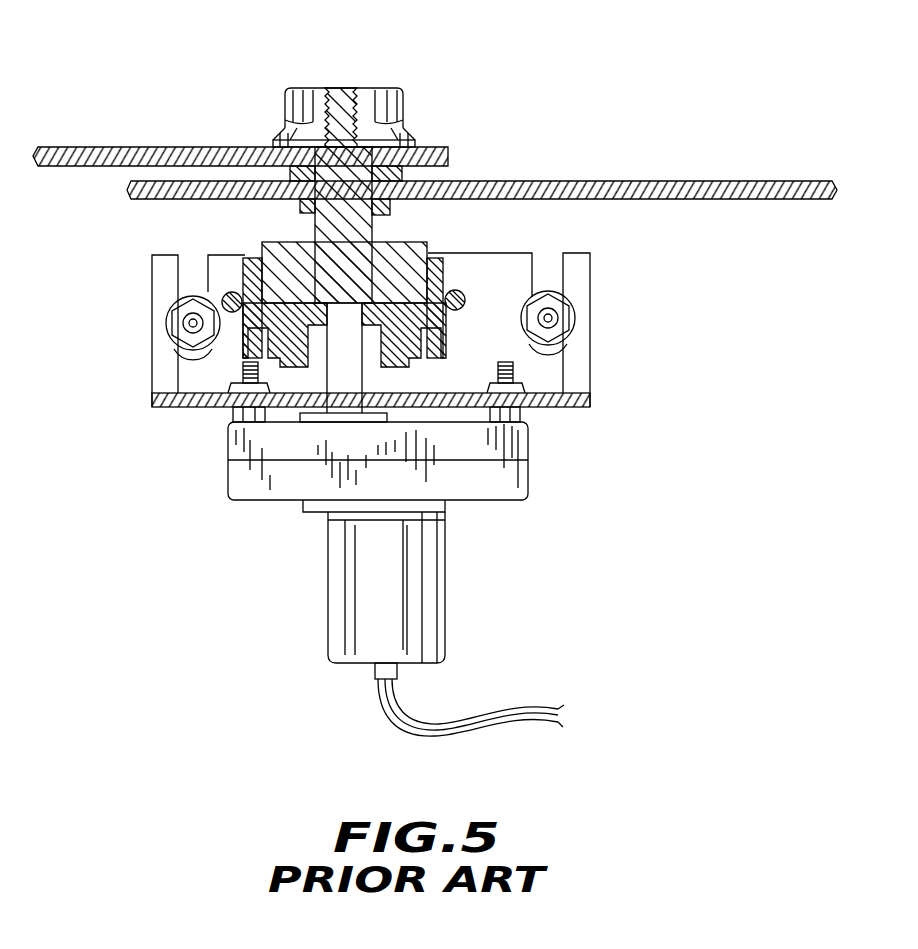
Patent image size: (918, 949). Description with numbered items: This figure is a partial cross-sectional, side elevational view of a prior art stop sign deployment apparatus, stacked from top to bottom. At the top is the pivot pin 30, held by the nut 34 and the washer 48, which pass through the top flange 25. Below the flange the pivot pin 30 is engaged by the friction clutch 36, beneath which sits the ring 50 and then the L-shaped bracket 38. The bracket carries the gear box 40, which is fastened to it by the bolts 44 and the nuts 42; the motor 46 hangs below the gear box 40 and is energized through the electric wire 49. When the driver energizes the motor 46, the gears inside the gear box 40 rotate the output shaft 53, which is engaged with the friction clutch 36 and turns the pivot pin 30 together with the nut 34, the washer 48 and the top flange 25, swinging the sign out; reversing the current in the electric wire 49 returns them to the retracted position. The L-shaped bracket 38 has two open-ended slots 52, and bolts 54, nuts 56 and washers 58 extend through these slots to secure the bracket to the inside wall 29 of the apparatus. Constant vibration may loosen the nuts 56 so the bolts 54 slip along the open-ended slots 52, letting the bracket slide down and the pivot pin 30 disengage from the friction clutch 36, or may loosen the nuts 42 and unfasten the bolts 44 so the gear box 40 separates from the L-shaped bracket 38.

The top flange 25 is at (152, 147).
The inside wall 29 is at (92, 243).
The pivot pin 30 is at (350, 88).
The nut 34 is at (287, 96).
The friction clutch 36 is at (250, 258).
The L-shaped bracket 38 is at (170, 408).
The gear box 40 is at (228, 468).
The nuts 42 is at (243, 385).
The bolts 44 is at (258, 373).
The motor 46 is at (328, 597).
The washer 48 is at (275, 132).
The electric wire 49 is at (521, 710).
The ring 50 is at (230, 291).
The open-ended slots 52 is at (191, 278).
The output shaft 53 is at (367, 387).
The bolts 54 is at (192, 323).
The nuts 56 is at (176, 312).
The washers 58 is at (170, 303).